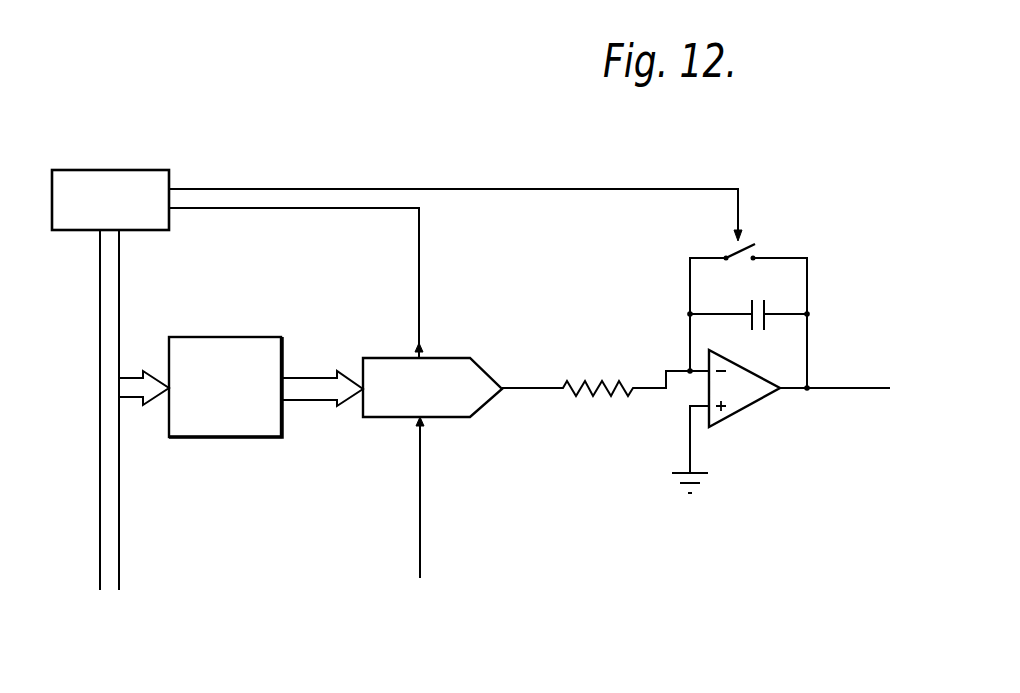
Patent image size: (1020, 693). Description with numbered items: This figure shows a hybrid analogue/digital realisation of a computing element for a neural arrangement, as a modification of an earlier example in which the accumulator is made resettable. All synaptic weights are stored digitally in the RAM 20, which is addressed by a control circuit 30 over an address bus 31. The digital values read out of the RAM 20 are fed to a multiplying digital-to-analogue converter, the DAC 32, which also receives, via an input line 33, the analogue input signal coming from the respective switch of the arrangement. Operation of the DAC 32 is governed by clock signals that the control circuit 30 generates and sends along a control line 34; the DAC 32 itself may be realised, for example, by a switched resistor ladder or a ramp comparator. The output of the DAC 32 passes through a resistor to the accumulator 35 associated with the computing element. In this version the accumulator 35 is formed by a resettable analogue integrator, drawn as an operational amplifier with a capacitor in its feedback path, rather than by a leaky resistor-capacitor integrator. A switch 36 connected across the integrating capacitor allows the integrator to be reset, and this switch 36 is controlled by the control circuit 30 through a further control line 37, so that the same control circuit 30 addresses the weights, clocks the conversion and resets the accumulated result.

The RAM 20 is at (226, 440).
The control circuit 30 is at (111, 170).
The address bus 31 is at (100, 360).
The multiplying digital-to-analogue converter 32 is at (452, 358).
The input line 33 is at (420, 487).
The control line 34 is at (419, 268).
The accumulator 35 is at (764, 423).
The switch 36 is at (759, 245).
The control line 37 is at (520, 189).